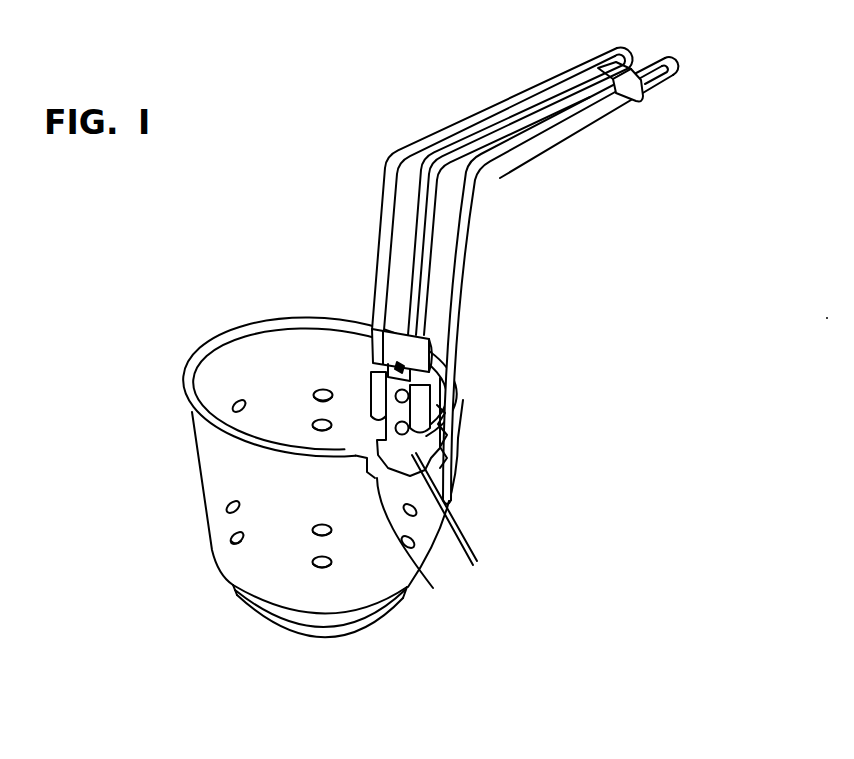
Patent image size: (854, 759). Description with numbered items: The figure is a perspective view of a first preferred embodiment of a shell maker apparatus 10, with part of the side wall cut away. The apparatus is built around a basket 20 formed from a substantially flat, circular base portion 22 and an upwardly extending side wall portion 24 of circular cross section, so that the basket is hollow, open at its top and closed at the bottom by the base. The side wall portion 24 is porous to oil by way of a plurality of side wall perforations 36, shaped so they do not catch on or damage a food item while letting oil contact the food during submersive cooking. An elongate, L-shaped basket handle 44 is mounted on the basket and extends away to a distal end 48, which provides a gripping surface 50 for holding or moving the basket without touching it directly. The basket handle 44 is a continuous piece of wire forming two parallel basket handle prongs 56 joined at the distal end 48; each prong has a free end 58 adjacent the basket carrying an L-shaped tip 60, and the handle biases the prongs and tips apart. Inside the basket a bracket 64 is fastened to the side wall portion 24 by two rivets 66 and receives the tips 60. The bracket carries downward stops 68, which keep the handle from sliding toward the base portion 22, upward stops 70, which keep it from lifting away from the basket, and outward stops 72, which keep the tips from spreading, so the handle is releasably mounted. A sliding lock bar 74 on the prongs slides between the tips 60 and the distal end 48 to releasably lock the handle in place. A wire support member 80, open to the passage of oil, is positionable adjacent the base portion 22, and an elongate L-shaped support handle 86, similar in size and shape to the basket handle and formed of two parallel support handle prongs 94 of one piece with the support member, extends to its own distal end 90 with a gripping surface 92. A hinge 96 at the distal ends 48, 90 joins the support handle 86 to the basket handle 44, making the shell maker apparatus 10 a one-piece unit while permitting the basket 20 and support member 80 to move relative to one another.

The shell maker apparatus 10 is at (159, 319).
The basket 20 is at (198, 451).
The base portion 22 is at (307, 613).
The side wall portion 24 is at (223, 480).
The side wall perforations 36 is at (235, 541).
The basket handle 44 is at (509, 261).
The distal end 48 is at (630, 50).
The gripping surface 50 is at (483, 111).
The basket handle prongs 56 is at (386, 245).
The free end 58 is at (318, 391).
The L-shaped tips 60 is at (372, 400).
The bracket 64 is at (417, 330).
The rivets 66 is at (405, 428).
The downward stops 68 is at (450, 468).
The upward stops 70 is at (461, 522).
The outward stops 72 is at (375, 368).
The sliding lock bar 74 is at (426, 358).
The support member 80 is at (343, 639).
The support handle 86 is at (528, 160).
The distal end 90 is at (625, 108).
The gripping surface 92 is at (577, 140).
The support handle prongs 94 is at (433, 252).
The hinge 96 is at (653, 97).